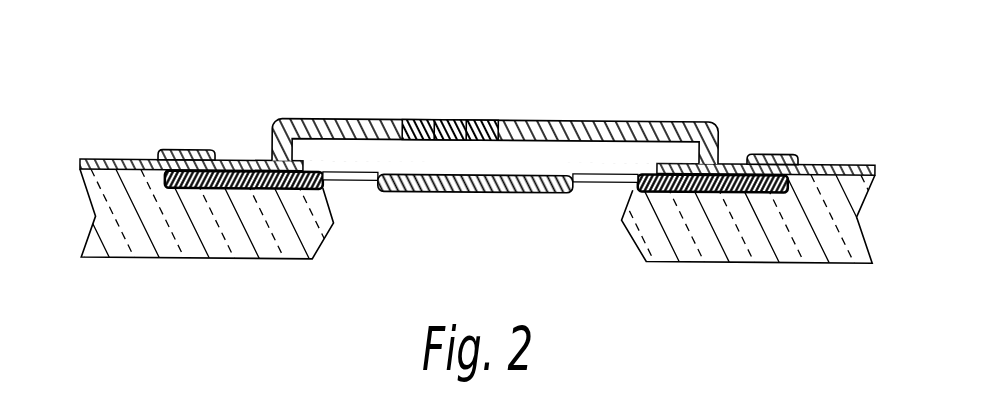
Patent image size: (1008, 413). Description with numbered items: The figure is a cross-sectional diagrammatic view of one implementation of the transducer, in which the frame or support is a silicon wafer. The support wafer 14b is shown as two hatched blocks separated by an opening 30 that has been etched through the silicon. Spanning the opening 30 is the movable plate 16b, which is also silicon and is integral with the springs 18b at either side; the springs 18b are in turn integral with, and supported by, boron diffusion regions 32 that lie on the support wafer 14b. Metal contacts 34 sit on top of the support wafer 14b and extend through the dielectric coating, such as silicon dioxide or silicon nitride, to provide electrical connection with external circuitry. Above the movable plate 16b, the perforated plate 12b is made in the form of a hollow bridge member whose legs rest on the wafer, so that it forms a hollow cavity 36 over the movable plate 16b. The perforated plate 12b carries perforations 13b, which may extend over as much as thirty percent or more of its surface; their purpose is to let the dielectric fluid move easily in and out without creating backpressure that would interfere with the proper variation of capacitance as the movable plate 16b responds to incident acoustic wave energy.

The perforated plate 12b is at (542, 116).
The perforations 13b is at (468, 117).
The support wafer 14b is at (185, 257).
The movable plate 16b is at (475, 189).
The springs 18b is at (350, 176).
The opening 30 is at (521, 242).
The boron diffusion regions 32 is at (313, 168).
The metal contacts 34 is at (187, 147).
The hollow cavity 36 is at (521, 164).